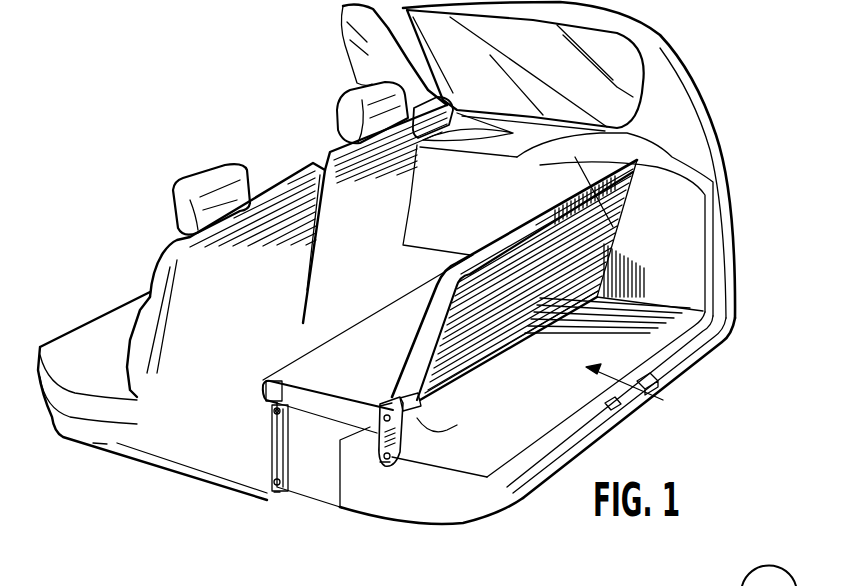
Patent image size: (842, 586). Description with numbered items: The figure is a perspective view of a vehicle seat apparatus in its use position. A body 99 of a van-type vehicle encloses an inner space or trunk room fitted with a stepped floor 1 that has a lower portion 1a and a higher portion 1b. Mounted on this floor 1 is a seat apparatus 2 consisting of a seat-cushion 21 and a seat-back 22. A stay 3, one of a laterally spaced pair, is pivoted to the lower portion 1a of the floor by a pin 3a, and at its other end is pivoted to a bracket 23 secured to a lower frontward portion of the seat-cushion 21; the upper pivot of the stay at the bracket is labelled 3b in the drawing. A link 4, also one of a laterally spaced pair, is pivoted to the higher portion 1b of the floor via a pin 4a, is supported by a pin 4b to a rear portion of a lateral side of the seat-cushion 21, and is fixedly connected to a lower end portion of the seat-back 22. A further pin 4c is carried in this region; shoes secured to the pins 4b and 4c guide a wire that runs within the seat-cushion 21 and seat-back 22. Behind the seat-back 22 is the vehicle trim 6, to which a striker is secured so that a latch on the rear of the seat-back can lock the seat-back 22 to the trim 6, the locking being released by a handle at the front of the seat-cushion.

The floor 1 is at (663, 400).
The lower portion 1a is at (177, 450).
The higher portion 1b is at (473, 443).
The seat apparatus 2 is at (511, 280).
The seat-cushion 21 is at (340, 382).
The seat-back 22 is at (580, 250).
The bracket 23 is at (268, 406).
The stay 3 is at (270, 449).
The pin 3a is at (277, 503).
The upper pivot 3b is at (283, 377).
The link 4 is at (392, 457).
The pin 4a is at (378, 463).
The pin 4b is at (381, 406).
The pin 4c is at (437, 425).
The trim 6 is at (665, 163).
The body 99 is at (693, 77).